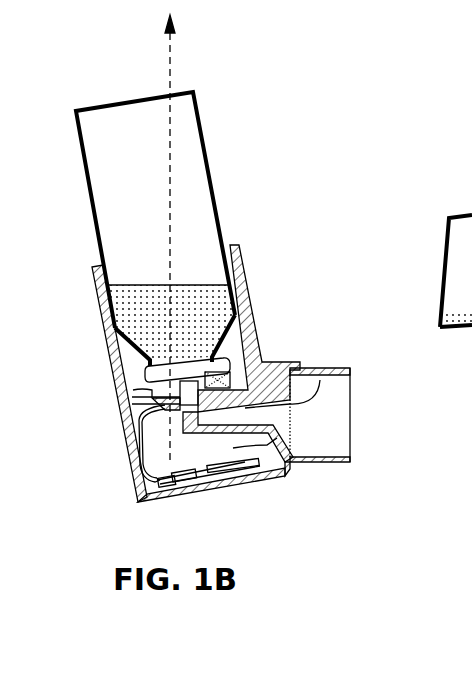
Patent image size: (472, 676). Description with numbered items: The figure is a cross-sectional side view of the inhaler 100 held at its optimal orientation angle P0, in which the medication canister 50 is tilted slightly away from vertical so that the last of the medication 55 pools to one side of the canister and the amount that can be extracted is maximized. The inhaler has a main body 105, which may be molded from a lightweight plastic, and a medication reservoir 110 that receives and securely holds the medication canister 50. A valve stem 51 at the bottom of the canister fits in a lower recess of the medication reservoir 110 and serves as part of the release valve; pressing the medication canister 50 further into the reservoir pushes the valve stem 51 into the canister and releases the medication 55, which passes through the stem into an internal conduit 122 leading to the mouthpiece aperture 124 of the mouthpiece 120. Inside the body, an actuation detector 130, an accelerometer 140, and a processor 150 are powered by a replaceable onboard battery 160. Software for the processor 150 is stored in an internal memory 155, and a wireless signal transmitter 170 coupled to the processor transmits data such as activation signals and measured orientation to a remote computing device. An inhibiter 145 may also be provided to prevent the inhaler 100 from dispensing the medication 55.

The inhaler 100 is at (266, 130).
The medication canister 50 is at (148, 95).
The optimal orientation angle P0 is at (168, 183).
The medication 55 is at (158, 313).
The valve stem 51 is at (237, 340).
The medication reservoir 110 is at (128, 352).
The main body 105 is at (131, 470).
The mouthpiece 120 is at (310, 462).
The internal conduit 122 is at (322, 380).
The mouthpiece aperture 124 is at (370, 395).
The actuation detector 130 is at (156, 389).
The accelerometer 140 is at (162, 481).
The inhibiter 145 is at (236, 372).
The processor 150 is at (200, 487).
The internal memory 155 is at (181, 470).
The onboard battery 160 is at (243, 472).
The wireless signal transmitter 170 is at (277, 440).